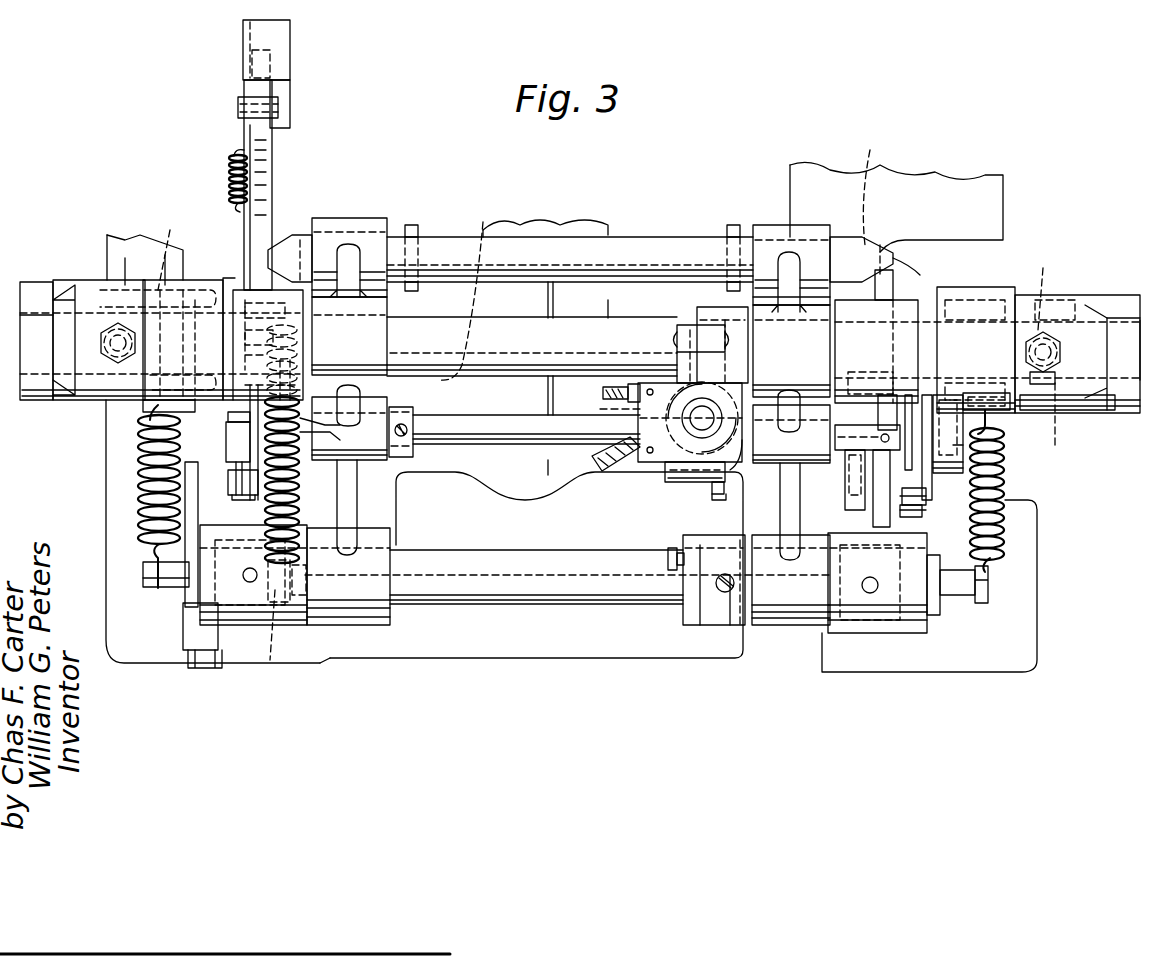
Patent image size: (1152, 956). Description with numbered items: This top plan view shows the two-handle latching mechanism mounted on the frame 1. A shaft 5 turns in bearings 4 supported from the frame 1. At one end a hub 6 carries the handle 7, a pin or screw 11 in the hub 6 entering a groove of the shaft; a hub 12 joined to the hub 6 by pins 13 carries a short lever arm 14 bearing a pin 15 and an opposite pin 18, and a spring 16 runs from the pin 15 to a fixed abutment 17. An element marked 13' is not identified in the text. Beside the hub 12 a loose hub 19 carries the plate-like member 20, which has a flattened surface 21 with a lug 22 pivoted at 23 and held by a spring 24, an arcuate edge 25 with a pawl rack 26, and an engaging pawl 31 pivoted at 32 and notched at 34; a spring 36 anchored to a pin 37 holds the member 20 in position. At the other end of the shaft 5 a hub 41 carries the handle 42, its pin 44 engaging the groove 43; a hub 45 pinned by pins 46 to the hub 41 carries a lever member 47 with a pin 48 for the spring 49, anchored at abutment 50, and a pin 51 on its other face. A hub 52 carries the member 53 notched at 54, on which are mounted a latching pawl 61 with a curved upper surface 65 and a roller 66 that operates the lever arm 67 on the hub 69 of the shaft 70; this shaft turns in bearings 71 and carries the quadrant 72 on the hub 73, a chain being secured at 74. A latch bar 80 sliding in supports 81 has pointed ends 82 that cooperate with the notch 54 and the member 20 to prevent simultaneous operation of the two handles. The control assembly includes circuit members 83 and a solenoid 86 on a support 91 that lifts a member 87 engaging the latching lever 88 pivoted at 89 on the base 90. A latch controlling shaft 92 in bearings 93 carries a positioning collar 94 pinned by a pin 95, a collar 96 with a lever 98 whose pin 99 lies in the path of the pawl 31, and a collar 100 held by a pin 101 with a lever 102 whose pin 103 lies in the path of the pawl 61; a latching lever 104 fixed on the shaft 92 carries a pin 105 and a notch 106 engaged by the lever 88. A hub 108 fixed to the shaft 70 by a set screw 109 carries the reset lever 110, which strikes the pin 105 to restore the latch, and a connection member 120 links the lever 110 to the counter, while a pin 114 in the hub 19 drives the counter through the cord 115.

The frame 1 is at (135, 662).
The bearings 4 is at (378, 308).
The shaft 5 is at (440, 330).
The hub 6 is at (76, 285).
The handle 7 is at (30, 318).
The pin or screw 11 is at (118, 350).
The hub 12 is at (193, 280).
The pins 13 is at (172, 249).
The ledge 13' is at (153, 409).
The lever arm 14 is at (140, 440).
The pin 15 is at (152, 410).
The spring 16 is at (140, 513).
The fixed pin or abutment 17 is at (142, 585).
The second pin 18 is at (228, 420).
The hub 19 is at (240, 290).
The plate-like member 20 is at (264, 150).
The flattened upper surface 21 is at (266, 63).
The lug 22 is at (268, 36).
The pivot 23 is at (280, 110).
The spring 24 is at (232, 168).
The arcuate edge 25 is at (262, 628).
The pawl rack 26 is at (236, 540).
The engaging pawl 31 is at (234, 452).
The pivot 32 is at (233, 345).
The notch 34 is at (226, 435).
The spring 36 is at (295, 497).
The pin or abutment 37 is at (280, 605).
The hub 41 is at (1075, 410).
The lever or handle 42 is at (1122, 318).
The groove 43 is at (1040, 410).
The pin 44 is at (1048, 338).
The hub 45 is at (975, 295).
The pins 46 is at (1055, 357).
The lever member 47 is at (957, 445).
The pin 48 is at (992, 426).
The spring 49 is at (1006, 480).
The pin or fixed abutment 50 is at (963, 594).
The pin 51 is at (950, 473).
The hub 52 is at (900, 312).
The member 53 is at (896, 280).
The notch 54 is at (918, 268).
The latching pawl 61 is at (927, 412).
The curved upper surface 65 is at (928, 503).
The roller 66 is at (848, 500).
The lever arm 67 is at (852, 520).
The hub 69 is at (908, 630).
The shaft 70 is at (415, 655).
The bearings 71 is at (380, 540).
The quadrant 72 is at (200, 622).
The hub 73 is at (252, 625).
The chain attachment 74 is at (183, 635).
The latch bar 80 is at (660, 248).
The supports 81 is at (350, 222).
The pointed ends 82 is at (280, 235).
The circuit members 83 is at (598, 450).
The solenoid 86 is at (617, 409).
The member 87 is at (700, 420).
The latching lever 88 is at (690, 480).
The pivot 89 is at (678, 338).
The abutment or base 90 is at (710, 315).
The support 91 is at (736, 462).
The latch controlling shaft 92 is at (497, 430).
The bearings 93 is at (360, 465).
The positioning collar 94 is at (417, 422).
The pin 95 is at (402, 424).
The second positioning collar 96 is at (318, 397).
The lever 98 is at (258, 472).
The pin 99 is at (245, 500).
The collar 100 is at (885, 418).
The pin or screw 101 is at (880, 437).
The lever 102 is at (925, 512).
The pin 103 is at (928, 495).
The latching lever 104 is at (720, 500).
The laterally projecting pin 105 is at (672, 480).
The notch 106 is at (712, 492).
The hub 108 is at (730, 627).
The set screw 109 is at (722, 592).
The reset lever 110 is at (690, 597).
The pin or projection 114 is at (322, 427).
The cord or wire 115 is at (335, 434).
The connection member 120 is at (677, 548).